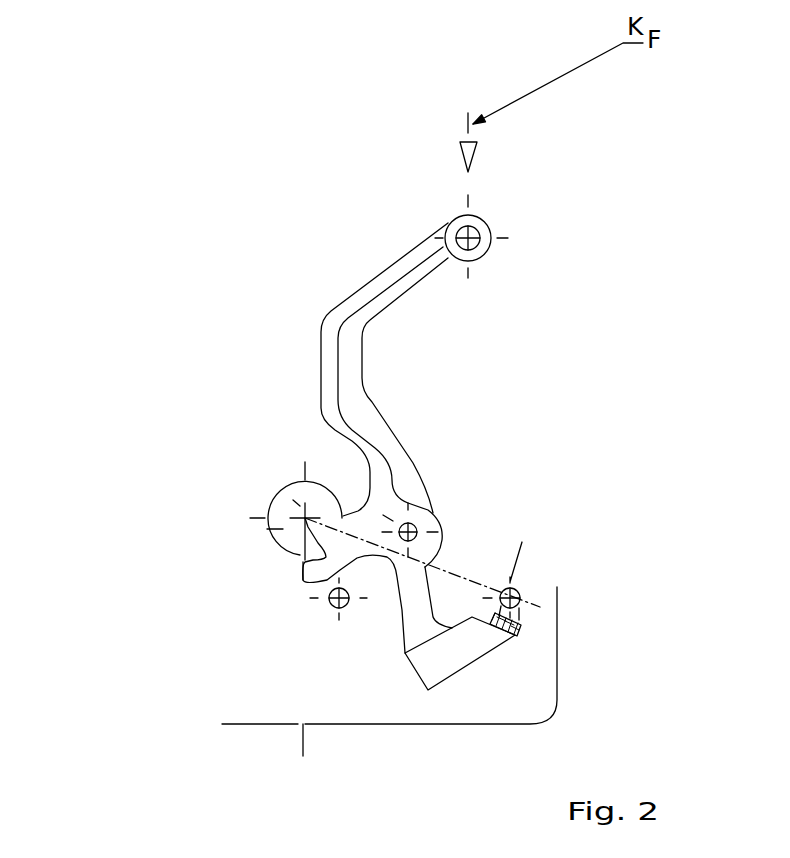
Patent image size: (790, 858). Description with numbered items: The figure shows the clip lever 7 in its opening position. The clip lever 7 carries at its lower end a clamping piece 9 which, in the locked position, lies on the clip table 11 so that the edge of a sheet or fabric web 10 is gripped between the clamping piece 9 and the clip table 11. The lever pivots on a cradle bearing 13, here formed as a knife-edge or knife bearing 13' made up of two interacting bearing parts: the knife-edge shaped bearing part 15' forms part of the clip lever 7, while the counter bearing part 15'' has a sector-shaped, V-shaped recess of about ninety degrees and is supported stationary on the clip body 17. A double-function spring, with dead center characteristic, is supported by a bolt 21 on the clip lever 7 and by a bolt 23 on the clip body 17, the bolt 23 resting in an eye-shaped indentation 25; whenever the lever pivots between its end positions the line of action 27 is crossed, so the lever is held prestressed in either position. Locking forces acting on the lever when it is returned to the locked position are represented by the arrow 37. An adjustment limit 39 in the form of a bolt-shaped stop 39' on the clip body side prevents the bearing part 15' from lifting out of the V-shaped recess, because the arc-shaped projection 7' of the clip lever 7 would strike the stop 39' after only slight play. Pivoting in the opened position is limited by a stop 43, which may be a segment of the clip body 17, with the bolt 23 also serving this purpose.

The clip lever 7 is at (291, 405).
The arc-shaped projection 7' is at (201, 592).
The clamping piece 9 is at (452, 652).
The sheet or fabric web 10 is at (247, 724).
The clip table 11 is at (330, 747).
The cradle bearing 13 is at (200, 538).
The knife-edge or knife bearing 13' is at (201, 449).
The knife-edge or knife-shaped bearing part 15' is at (191, 408).
The counter bearing part 15'' is at (181, 489).
The clip body 17 is at (550, 612).
The bolt 21 is at (410, 530).
The bolt 23 is at (519, 588).
The eye-shaped indentation 25 is at (515, 610).
The line of action 27 is at (464, 568).
The arrow 37 is at (468, 118).
The adjustment limit 39 is at (222, 632).
The stop 39' is at (227, 651).
The stop 43 is at (522, 642).